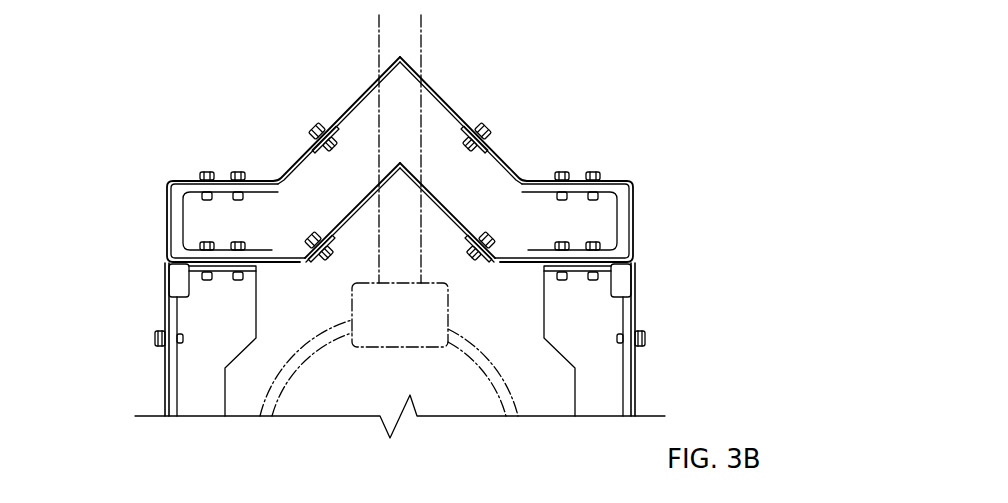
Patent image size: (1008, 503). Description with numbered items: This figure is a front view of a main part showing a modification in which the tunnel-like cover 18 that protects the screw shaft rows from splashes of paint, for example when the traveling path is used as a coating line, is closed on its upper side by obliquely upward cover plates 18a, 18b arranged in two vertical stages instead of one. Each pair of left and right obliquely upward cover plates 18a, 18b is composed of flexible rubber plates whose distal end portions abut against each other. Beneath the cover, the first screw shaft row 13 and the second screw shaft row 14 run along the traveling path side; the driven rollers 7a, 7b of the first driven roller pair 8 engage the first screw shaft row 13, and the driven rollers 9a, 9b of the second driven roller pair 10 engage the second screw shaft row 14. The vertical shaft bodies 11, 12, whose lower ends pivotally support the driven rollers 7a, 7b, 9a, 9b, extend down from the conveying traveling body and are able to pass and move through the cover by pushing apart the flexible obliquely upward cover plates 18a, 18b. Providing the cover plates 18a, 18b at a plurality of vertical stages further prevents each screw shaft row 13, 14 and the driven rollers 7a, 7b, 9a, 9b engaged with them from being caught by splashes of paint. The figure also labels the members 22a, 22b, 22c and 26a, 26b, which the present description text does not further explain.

The obliquely upward cover plate 18a is at (432, 200).
The obliquely upward cover plate 18b is at (368, 201).
The tunnel-like cover 18 is at (165, 317).
The vertical shaft body 11 is at (484, 149).
The vertical shaft body 12 is at (413, 225).
The first screw shaft row 13 is at (508, 346).
The second screw shaft row 14 is at (507, 360).
The first driven roller pair 8 is at (259, 342).
The second driven roller pair 10 is at (350, 298).
The driven roller 7a is at (392, 370).
The driven roller 7b is at (392, 370).
The driven roller 9a is at (392, 370).
The driven roller 9b is at (390, 360).
The reinforcing member 22a is at (439, 410).
The reinforcing member 22b is at (439, 410).
The reinforcing member 22c is at (439, 410).
The reinforcing member 26a is at (439, 410).
The reinforcing member 26b is at (514, 387).